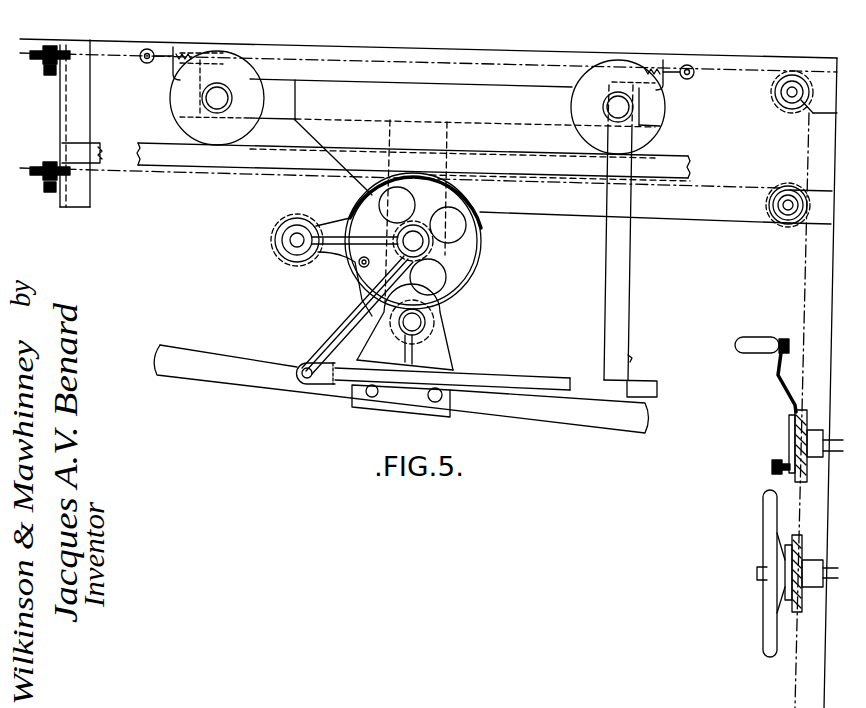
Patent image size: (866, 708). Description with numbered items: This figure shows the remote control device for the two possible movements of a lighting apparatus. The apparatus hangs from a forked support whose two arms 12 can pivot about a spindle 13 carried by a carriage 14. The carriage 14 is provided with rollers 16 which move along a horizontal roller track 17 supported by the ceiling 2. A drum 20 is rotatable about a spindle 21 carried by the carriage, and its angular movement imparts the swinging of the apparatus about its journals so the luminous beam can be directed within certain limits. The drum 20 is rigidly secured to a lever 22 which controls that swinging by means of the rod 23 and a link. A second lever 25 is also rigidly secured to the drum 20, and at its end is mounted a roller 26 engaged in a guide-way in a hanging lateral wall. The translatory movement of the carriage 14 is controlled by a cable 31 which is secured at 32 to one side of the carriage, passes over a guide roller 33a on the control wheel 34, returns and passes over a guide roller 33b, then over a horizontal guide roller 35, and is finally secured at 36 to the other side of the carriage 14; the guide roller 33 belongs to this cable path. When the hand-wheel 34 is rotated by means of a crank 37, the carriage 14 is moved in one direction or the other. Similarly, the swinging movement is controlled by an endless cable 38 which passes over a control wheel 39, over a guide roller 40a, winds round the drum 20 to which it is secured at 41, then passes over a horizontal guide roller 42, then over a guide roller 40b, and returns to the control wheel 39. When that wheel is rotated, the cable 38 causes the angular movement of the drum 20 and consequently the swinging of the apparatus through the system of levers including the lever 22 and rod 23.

The ceiling 2 is at (815, 57).
The arms 12 is at (574, 420).
The spindle 13 is at (421, 322).
The carriage 14 is at (354, 183).
The rollers 16 is at (258, 74).
The horizontal roller track 17 is at (155, 143).
The drum 20 is at (483, 268).
The spindle 21 is at (432, 241).
The lever 22 is at (341, 325).
The rod 23 is at (497, 377).
The second lever 25 is at (331, 251).
The roller 26 is at (291, 262).
The cable 31 is at (735, 74).
The securing point 32 is at (687, 79).
The guide roller 33 is at (858, 131).
The guide roller 33a is at (778, 98).
The guide roller 33b is at (756, 129).
The hand-wheel 34 is at (803, 414).
The horizontal guide roller 35 is at (45, 58).
The securing point 36 is at (150, 50).
The crank 37 is at (778, 370).
The endless cable 38 is at (541, 180).
The control wheel 39 is at (800, 540).
The guide roller 40a is at (770, 215).
The guide roller 40b is at (748, 249).
The securing point 41 is at (358, 268).
The horizontal guide roller 42 is at (45, 180).